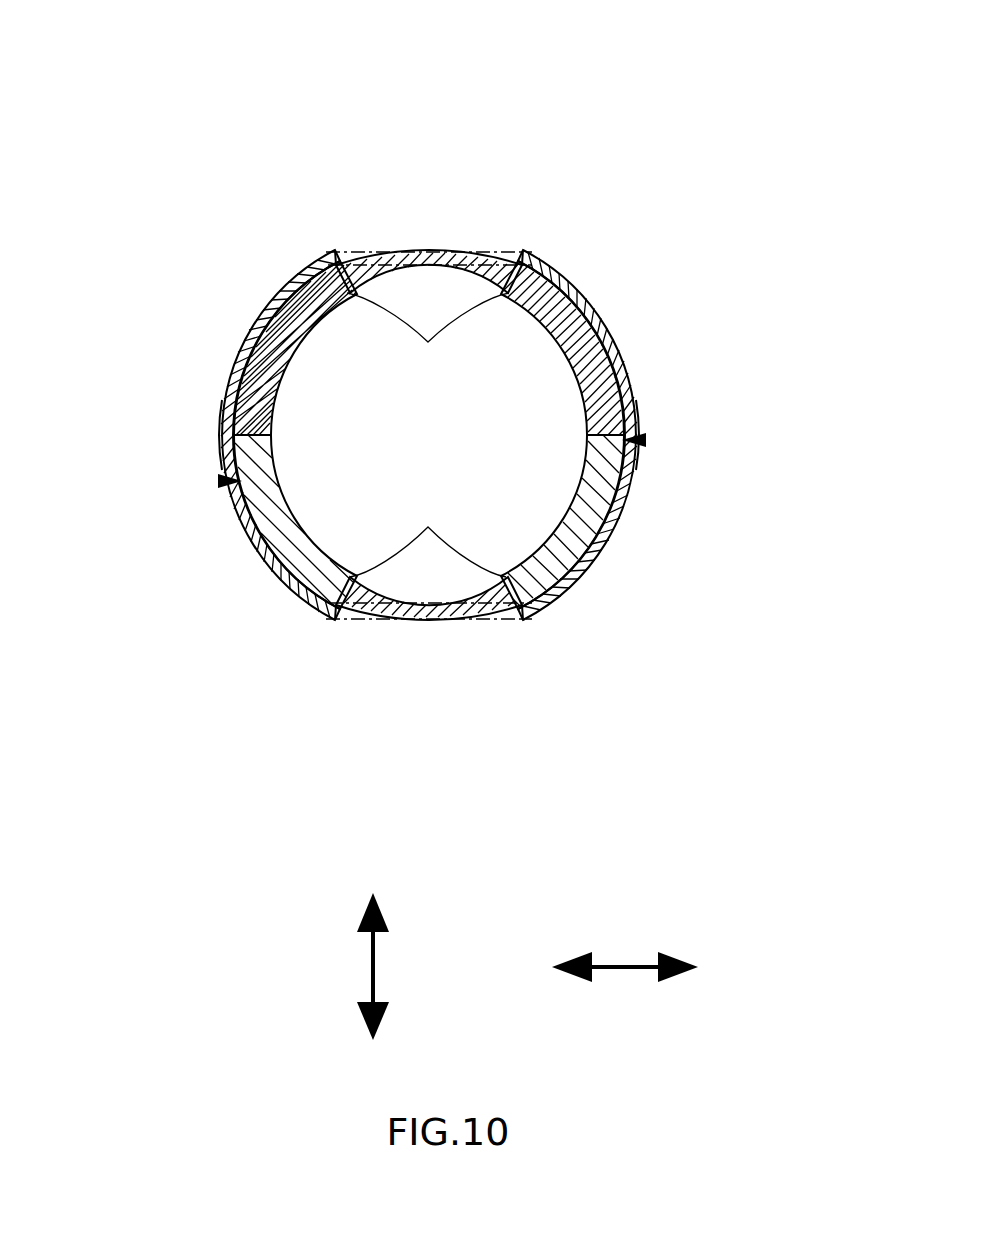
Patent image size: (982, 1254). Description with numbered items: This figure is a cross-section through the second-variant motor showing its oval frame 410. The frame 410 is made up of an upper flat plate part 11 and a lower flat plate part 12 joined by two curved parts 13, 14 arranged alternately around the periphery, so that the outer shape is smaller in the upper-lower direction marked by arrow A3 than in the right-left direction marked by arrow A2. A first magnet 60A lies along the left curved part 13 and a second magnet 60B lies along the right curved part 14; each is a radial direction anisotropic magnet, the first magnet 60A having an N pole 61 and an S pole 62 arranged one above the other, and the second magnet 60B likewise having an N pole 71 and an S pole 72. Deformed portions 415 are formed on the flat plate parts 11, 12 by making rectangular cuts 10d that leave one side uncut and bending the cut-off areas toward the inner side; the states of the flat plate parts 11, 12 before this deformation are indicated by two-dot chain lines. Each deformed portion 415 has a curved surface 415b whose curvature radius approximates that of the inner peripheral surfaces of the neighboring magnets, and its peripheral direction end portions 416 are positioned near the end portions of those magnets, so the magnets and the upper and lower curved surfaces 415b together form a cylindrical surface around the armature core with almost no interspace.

The frame 410 is at (539, 227).
The deformed portion 415 is at (398, 253).
The curved surface 415b is at (414, 262).
The cut 10d is at (345, 251).
The flat plate part 11 is at (478, 252).
The flat plate part 12 is at (372, 623).
The N pole 61 is at (291, 358).
The S pole 62 is at (291, 514).
The N pole 71 is at (578, 356).
The S pole 72 is at (567, 516).
The curved part 13 is at (220, 419).
The curved part 14 is at (618, 510).
The first magnet 60A is at (218, 481).
The second magnet 60B is at (646, 440).
The peripheral direction end portion 416 is at (428, 435).
The arrow indicating right-left direction A2 is at (647, 962).
The arrow indicating upper-lower direction A3 is at (372, 960).